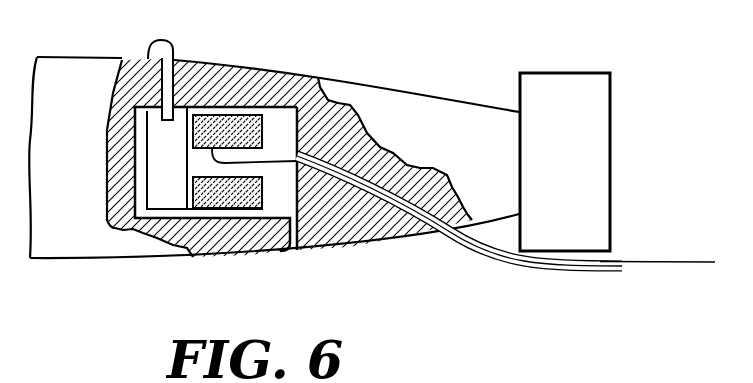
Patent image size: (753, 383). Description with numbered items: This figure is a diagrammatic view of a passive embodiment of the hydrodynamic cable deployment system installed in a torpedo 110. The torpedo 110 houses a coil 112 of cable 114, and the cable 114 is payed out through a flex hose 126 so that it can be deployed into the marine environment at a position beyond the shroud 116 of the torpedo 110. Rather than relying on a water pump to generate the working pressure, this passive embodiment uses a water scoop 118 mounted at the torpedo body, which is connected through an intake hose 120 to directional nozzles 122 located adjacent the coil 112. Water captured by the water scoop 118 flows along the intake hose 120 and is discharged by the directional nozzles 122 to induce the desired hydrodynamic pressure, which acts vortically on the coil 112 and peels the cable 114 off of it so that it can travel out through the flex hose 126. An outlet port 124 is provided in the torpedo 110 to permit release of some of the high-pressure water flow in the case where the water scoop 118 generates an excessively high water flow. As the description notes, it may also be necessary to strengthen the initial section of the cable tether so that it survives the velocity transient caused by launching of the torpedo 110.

The torpedo 110 is at (87, 57).
The coil 112 is at (235, 117).
The cable 114 is at (663, 262).
The shroud 116 is at (553, 75).
The water scoop 118 is at (161, 40).
The intake hose 120 is at (188, 82).
The directional nozzles 122 is at (163, 192).
The outlet port 124 is at (278, 243).
The flex hose 126 is at (453, 241).